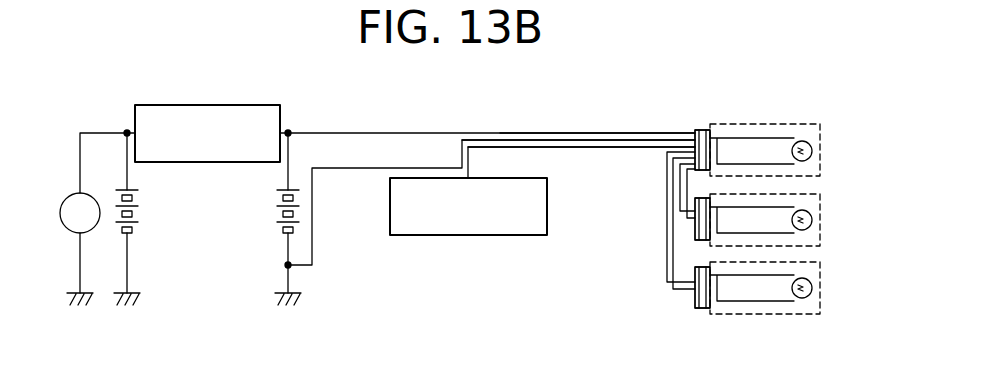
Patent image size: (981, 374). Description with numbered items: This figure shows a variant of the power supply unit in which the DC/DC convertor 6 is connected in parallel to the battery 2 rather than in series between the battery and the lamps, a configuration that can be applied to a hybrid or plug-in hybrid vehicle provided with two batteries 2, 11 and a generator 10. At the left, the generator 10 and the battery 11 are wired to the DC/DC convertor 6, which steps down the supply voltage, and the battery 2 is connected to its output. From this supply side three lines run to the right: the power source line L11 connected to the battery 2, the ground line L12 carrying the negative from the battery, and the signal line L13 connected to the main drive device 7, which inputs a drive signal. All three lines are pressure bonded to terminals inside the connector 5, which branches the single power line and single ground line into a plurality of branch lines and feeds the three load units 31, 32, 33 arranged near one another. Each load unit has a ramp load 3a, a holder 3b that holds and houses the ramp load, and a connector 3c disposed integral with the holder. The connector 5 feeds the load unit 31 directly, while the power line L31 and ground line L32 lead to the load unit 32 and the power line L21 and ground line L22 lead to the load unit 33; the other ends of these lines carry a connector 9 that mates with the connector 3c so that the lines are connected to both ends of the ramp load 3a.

The battery 2 is at (283, 187).
The ramp load 3a is at (813, 151).
The holder 3b is at (823, 166).
The connector 3c is at (708, 129).
The connector 5 is at (698, 129).
The DC/DC convertor 6 is at (237, 105).
The main drive device 7 is at (470, 235).
The connector 9 is at (693, 230).
The generator 10 is at (68, 201).
The battery 11 is at (130, 233).
The load unit 31 is at (822, 130).
The load unit 32 is at (822, 198).
The load unit 33 is at (822, 268).
The power source line L11 is at (618, 131).
The ground line L12 is at (565, 138).
The signal line L13 is at (507, 144).
The power line L21 is at (668, 242).
The ground line L22 is at (667, 270).
The power line L31 is at (681, 170).
The ground line L32 is at (686, 190).